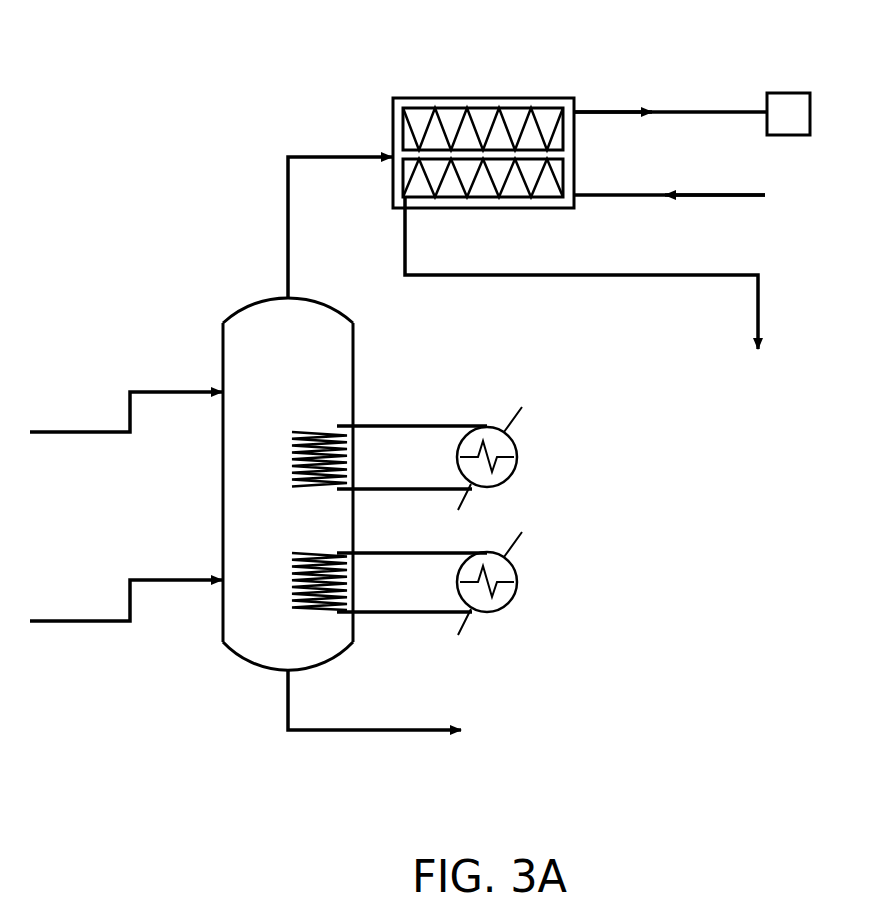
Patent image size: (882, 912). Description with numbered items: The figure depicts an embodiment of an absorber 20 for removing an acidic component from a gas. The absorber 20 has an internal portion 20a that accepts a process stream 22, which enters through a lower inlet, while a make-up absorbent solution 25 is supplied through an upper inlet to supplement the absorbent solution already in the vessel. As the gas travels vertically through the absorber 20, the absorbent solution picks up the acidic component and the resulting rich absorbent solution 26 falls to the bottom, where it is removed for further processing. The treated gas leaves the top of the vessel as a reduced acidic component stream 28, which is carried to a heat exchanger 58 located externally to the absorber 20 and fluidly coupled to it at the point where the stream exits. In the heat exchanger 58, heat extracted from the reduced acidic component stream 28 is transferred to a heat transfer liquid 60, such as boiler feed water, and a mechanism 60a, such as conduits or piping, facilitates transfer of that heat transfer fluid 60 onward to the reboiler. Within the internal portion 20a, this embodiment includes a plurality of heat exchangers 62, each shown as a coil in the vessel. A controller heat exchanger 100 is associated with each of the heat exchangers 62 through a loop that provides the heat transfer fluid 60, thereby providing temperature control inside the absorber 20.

The absorber 20 is at (182, 488).
The internal portion 20a is at (247, 513).
The process stream 22 is at (97, 623).
The make-up absorbent solution 25 is at (97, 430).
The rich absorbent solution 26 is at (289, 702).
The reduced acidic component stream 28 is at (287, 238).
The heat exchanger 58 is at (482, 97).
The heat transfer liquid 60 is at (723, 197).
The mechanism 60a is at (783, 93).
The heat exchangers 62 is at (313, 432).
The controller heat exchanger 100 is at (517, 446).